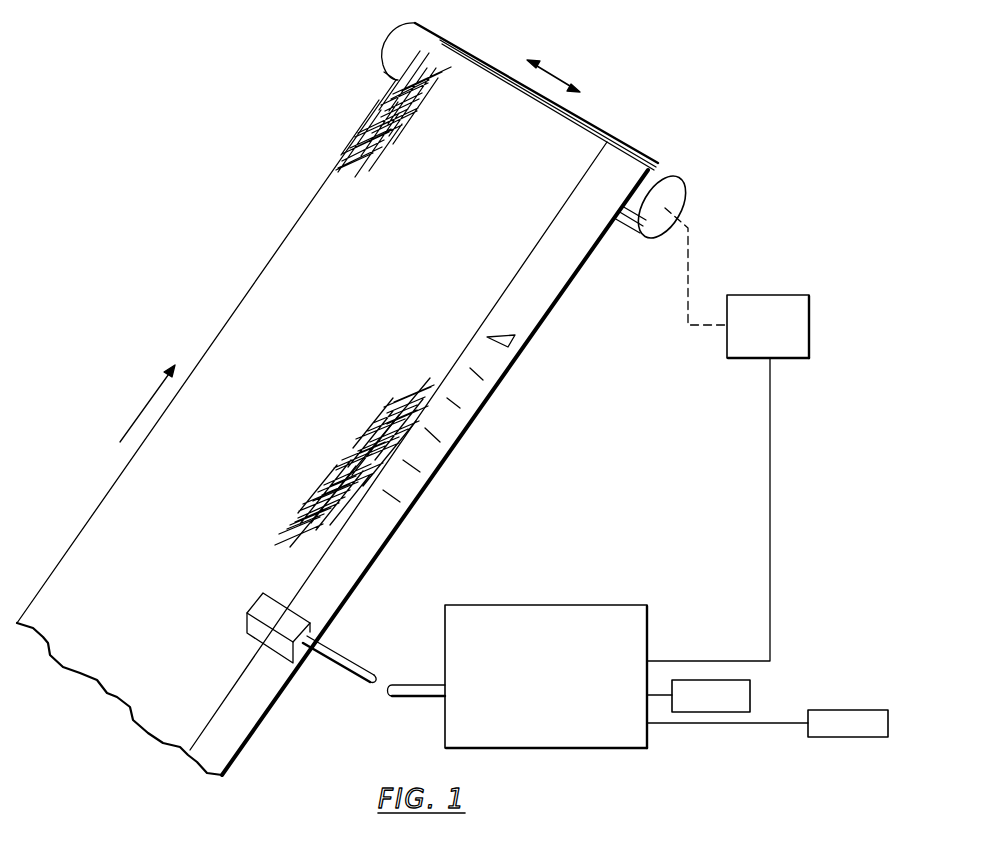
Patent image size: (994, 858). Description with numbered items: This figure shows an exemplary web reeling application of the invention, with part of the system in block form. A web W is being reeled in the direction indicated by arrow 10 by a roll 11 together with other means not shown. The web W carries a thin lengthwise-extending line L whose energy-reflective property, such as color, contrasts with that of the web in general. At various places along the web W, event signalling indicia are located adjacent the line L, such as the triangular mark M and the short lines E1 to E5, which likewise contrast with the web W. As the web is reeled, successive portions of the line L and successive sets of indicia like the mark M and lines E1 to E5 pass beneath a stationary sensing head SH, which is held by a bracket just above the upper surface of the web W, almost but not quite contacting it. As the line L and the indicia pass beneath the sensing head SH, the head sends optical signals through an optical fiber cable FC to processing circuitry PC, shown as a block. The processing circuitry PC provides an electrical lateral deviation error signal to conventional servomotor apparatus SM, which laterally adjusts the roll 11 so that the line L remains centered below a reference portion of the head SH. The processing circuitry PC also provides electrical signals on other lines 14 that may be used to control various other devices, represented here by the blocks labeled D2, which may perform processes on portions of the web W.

The web W is at (283, 243).
The arrow 10 is at (140, 412).
The line L is at (528, 259).
The roll 11 is at (652, 168).
The triangular mark M is at (517, 347).
The short line E1 is at (477, 371).
The short line E5 is at (396, 500).
The sensing head SH is at (275, 617).
The optical fiber cable FC is at (422, 687).
The processing circuitry PC is at (547, 605).
The servomotor apparatus SM is at (760, 295).
The display/output device D2 is at (780, 708).
The other lines 14 is at (657, 696).